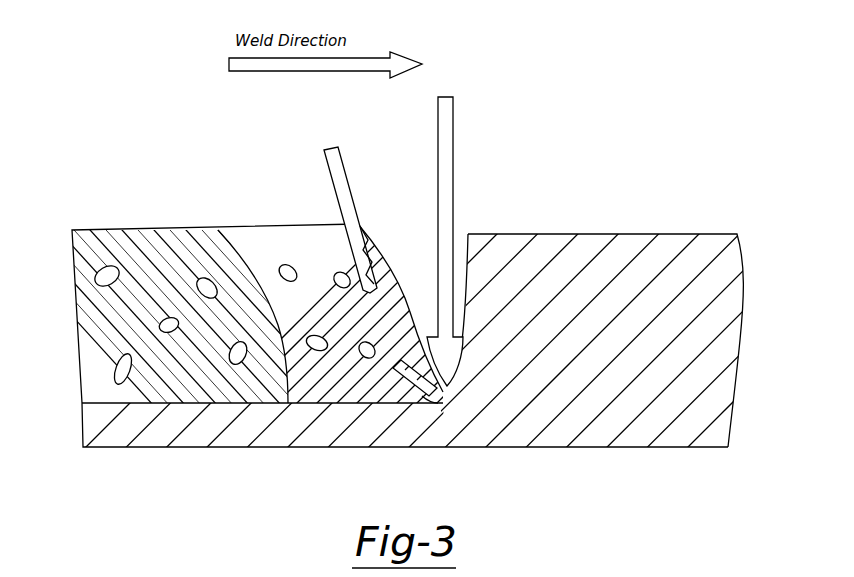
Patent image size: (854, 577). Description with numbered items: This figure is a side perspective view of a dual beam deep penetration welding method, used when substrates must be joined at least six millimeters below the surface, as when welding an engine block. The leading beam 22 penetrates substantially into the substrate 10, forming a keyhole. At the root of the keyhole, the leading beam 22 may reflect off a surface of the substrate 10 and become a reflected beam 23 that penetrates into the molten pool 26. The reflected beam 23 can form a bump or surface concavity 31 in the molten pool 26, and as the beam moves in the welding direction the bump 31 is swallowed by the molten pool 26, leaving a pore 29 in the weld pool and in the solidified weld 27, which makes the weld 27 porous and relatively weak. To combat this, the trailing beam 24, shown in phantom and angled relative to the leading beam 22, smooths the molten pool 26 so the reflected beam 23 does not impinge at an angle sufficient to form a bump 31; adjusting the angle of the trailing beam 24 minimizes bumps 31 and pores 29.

The substrate 10 is at (633, 236).
The leading beam 22 is at (453, 163).
The reflected beam 23 is at (419, 400).
The trailing beam 24 is at (326, 170).
The molten pool 26 is at (289, 232).
The solidified weld 27 is at (100, 318).
The pore 29 is at (99, 266).
The bump 31 is at (404, 358).